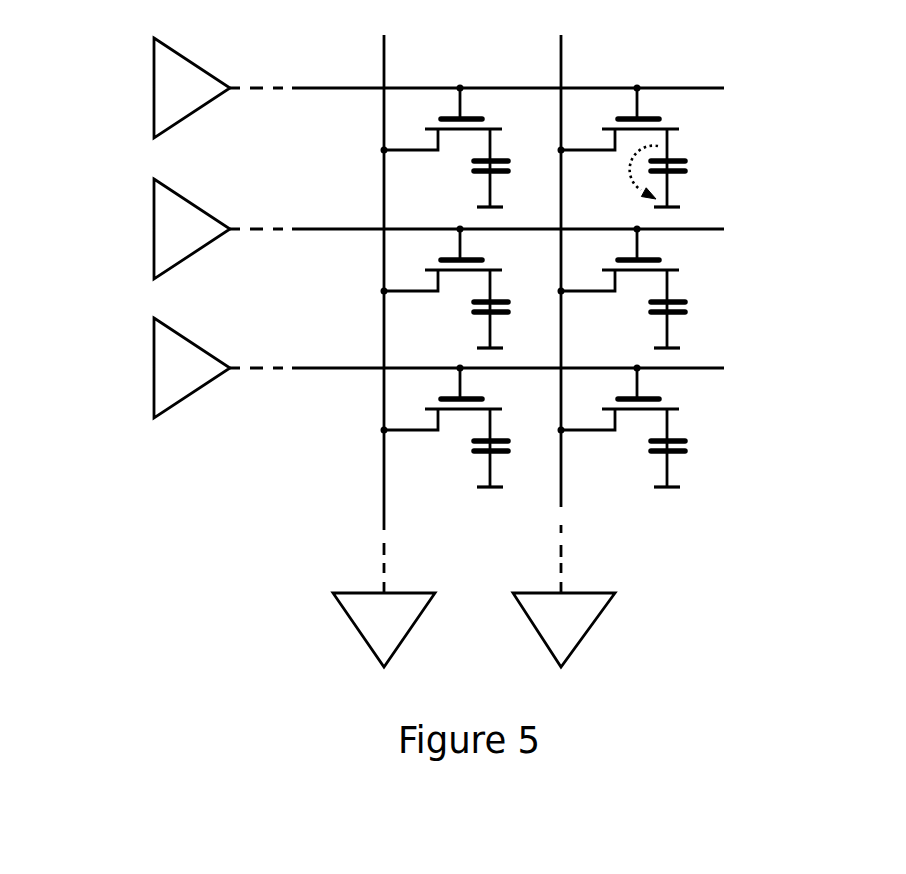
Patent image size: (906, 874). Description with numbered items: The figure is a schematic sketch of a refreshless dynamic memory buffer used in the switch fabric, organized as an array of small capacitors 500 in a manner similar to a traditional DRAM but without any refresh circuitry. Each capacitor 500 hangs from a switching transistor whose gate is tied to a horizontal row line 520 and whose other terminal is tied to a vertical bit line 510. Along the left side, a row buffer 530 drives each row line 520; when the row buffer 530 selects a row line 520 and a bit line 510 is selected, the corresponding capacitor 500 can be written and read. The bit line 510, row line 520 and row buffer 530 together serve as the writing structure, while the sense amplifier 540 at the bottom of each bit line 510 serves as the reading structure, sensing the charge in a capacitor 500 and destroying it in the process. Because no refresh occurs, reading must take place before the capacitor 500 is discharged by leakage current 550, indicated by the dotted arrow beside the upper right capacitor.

The capacitor 500 is at (686, 158).
The bit line 510 is at (561, 50).
The row line 520 is at (348, 88).
The row buffer 530 is at (154, 112).
The sense amplifier 540 is at (350, 593).
The leakage current 550 is at (634, 177).